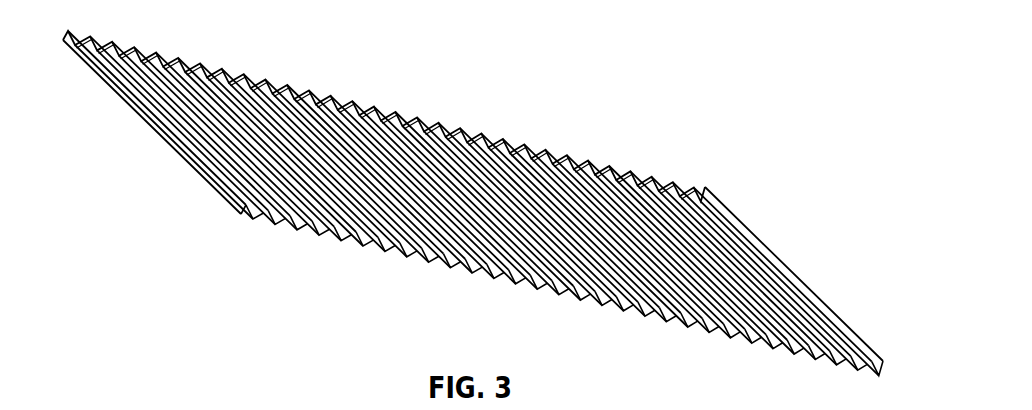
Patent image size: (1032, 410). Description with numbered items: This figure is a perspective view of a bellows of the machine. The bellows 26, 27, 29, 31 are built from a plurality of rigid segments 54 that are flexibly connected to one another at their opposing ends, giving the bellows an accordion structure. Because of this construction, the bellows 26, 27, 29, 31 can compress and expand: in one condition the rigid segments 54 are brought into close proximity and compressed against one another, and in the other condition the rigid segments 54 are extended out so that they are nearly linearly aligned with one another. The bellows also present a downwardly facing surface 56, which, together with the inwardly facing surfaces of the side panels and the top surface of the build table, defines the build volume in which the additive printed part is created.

The bellows 26 is at (473, 201).
The bellows 27 is at (473, 201).
The bellows 29 is at (473, 201).
The bellows 31 is at (404, 107).
The rigid segments 54 is at (567, 154).
The downwardly facing surface 56 is at (176, 101).